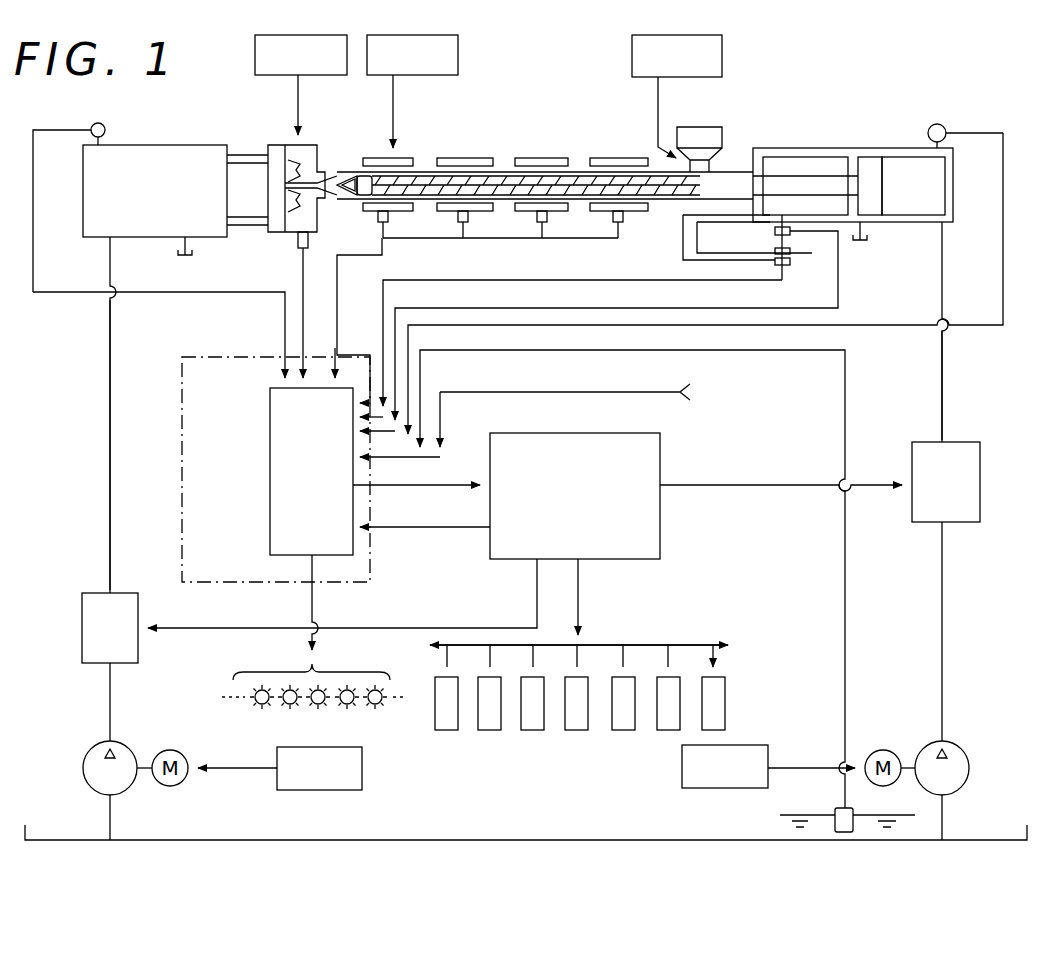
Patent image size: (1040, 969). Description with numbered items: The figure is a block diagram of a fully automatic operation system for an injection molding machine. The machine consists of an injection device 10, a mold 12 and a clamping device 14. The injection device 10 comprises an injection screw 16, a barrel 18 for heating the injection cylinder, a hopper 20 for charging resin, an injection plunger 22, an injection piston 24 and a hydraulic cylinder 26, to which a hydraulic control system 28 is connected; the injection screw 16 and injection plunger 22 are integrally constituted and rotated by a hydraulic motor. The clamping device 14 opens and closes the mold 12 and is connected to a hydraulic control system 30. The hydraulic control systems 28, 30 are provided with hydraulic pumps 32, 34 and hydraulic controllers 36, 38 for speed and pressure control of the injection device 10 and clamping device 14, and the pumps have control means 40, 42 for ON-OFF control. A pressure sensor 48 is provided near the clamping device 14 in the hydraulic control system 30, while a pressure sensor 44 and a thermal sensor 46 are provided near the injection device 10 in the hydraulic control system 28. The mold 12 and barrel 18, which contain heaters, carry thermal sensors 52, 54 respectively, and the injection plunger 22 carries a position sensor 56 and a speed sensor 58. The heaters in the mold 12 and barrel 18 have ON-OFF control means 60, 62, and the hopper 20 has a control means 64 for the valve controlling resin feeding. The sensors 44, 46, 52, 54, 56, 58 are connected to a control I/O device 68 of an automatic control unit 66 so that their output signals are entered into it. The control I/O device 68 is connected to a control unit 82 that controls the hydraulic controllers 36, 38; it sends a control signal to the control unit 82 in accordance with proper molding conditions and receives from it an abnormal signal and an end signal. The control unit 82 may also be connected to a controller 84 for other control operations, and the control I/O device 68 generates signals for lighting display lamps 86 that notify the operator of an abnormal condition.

The injection device 10 is at (593, 160).
The mold 12 is at (302, 147).
The clamping device 14 is at (170, 160).
The injection screw 16 is at (453, 180).
The barrel 18 is at (403, 160).
The hopper 20 is at (703, 132).
The injection plunger 22 is at (797, 180).
The injection piston 24 is at (870, 178).
The hydraulic cylinder 26 is at (908, 193).
The hydraulic control system 28 is at (945, 378).
The hydraulic control system 30 is at (110, 425).
The hydraulic pump 32 is at (964, 751).
The hydraulic pump 34 is at (90, 748).
The hydraulic controller 36 is at (982, 470).
The hydraulic controller 38 is at (82, 618).
The control means 40 is at (770, 752).
The control means 42 is at (277, 760).
The pressure sensor 44 is at (940, 122).
The thermal sensor 46 is at (836, 806).
The pressure sensor 48 is at (104, 125).
The thermal sensor 52 is at (297, 244).
The thermal sensor 54 is at (376, 220).
The position sensor 56 is at (774, 247).
The speed sensor 58 is at (790, 233).
The control means 60 is at (255, 50).
The control means 62 is at (458, 50).
The control means 64 is at (632, 52).
The automatic control unit 66 is at (203, 360).
The control I/O device 68 is at (270, 437).
The control unit 82 is at (660, 443).
The controller 84 is at (572, 714).
The display lamps 86 is at (348, 704).